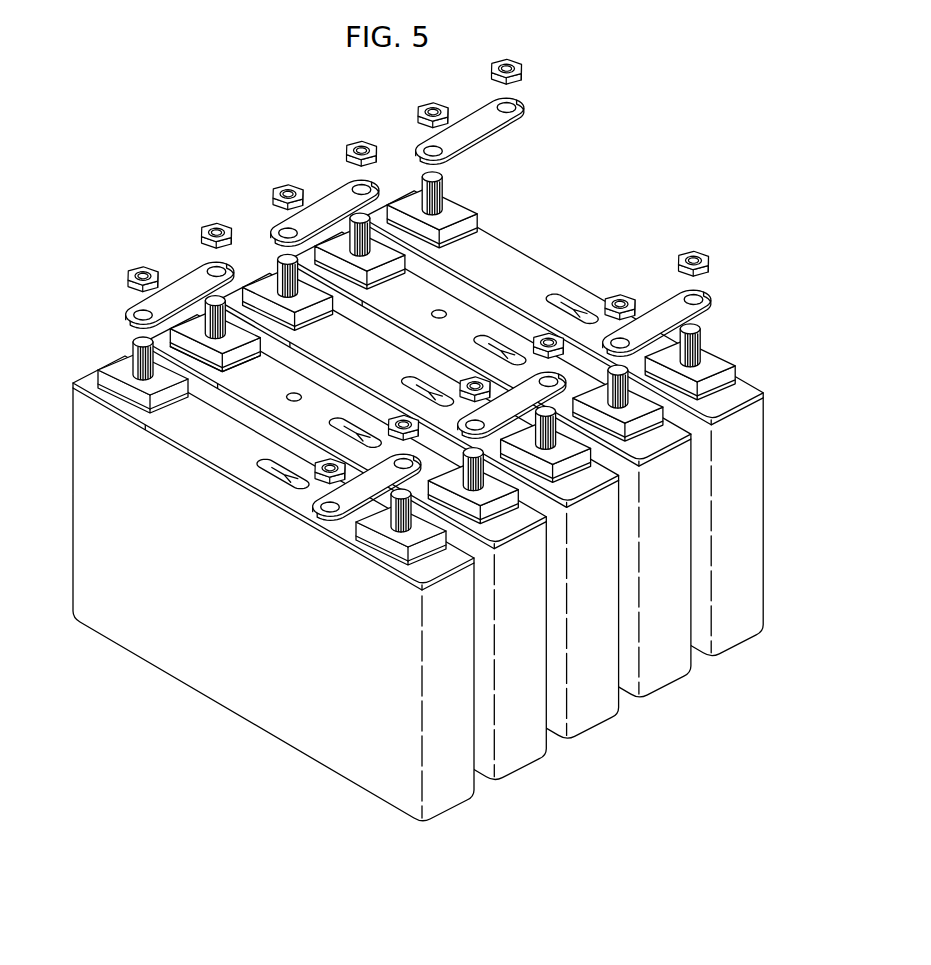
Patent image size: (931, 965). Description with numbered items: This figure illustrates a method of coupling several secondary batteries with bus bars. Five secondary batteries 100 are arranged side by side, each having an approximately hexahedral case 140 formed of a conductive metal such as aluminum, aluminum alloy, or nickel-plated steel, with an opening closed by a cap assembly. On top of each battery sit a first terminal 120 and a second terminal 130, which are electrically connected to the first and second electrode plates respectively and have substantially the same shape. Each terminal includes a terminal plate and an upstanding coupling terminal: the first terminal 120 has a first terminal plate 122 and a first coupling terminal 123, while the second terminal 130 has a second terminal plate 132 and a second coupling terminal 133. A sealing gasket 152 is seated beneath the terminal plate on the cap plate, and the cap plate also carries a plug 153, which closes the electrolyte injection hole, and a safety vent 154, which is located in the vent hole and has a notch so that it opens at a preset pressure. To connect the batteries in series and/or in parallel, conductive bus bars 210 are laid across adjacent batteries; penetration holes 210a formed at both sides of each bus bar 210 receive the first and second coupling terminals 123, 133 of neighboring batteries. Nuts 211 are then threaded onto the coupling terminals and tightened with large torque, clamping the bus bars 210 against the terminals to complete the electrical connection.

The secondary battery 100 is at (396, 439).
The first terminal 120 is at (130, 336).
The first terminal plate 122 is at (100, 363).
The first coupling terminal 123 is at (133, 352).
The second terminal 130 is at (264, 332).
The second terminal plate 132 is at (241, 356).
The second coupling terminal 133 is at (231, 305).
The case 140 is at (258, 706).
The sealing gasket 152 is at (218, 372).
The plug 153 is at (302, 391).
The safety vent 154 is at (264, 462).
The bus bar 210 is at (158, 263).
The penetration hole 210a is at (220, 265).
The nut 211 is at (212, 224).